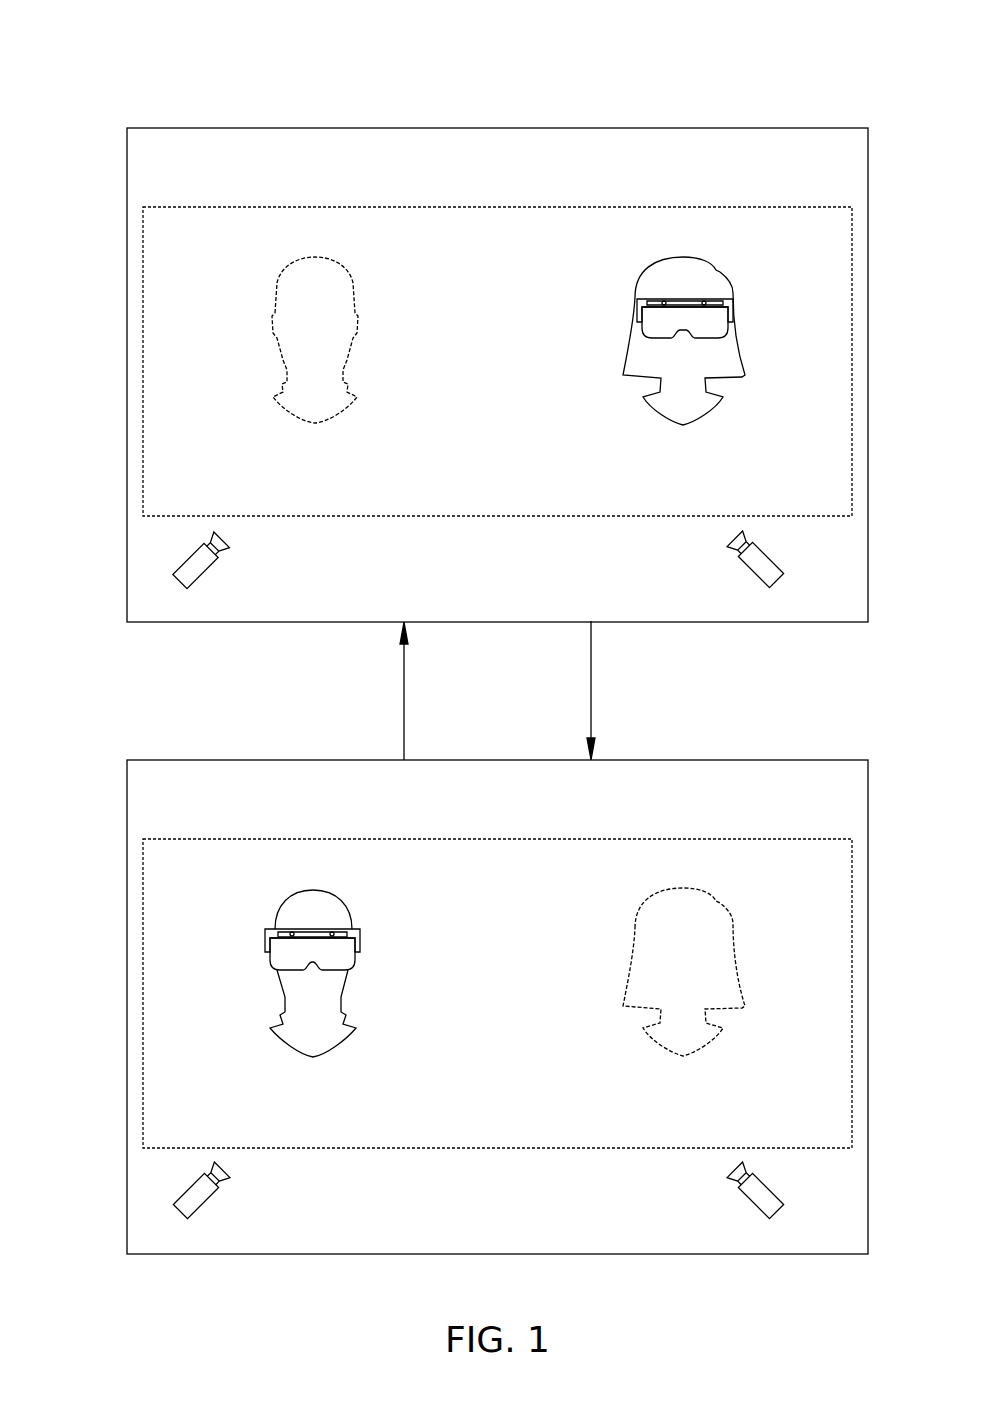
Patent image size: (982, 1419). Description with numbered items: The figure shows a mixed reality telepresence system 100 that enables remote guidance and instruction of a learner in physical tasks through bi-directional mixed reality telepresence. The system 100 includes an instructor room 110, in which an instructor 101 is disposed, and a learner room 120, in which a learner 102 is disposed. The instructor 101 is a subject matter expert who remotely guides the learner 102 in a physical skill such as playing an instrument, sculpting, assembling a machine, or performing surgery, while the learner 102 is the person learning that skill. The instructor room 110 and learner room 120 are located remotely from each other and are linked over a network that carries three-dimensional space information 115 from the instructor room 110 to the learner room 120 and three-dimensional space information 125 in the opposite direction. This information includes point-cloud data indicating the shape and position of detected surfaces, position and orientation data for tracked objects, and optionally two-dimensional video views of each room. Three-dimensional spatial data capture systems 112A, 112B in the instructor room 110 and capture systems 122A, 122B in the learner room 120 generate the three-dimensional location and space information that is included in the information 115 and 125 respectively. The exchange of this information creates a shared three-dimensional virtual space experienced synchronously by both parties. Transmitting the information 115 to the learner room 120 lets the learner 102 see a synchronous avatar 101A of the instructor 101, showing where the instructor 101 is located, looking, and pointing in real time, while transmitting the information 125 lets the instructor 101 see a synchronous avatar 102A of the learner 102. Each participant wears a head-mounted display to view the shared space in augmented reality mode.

The mixed reality telepresence system 100 is at (118, 0).
The instructor 101 is at (725, 323).
The synchronous avatar of instructor 101A is at (740, 897).
The learner 102 is at (308, 954).
The synchronous avatar of learner 102A is at (275, 267).
The instructor room 110 is at (608, 192).
The 3D spatial data capture system 112A is at (205, 568).
The 3D spatial data capture system 112B is at (748, 575).
The 3D space information 115 is at (591, 677).
The learner room 120 is at (602, 824).
The 3D spatial data capture system 122A is at (205, 1200).
The 3D spatial data capture system 122B is at (748, 1203).
The 3D space information 125 is at (404, 674).